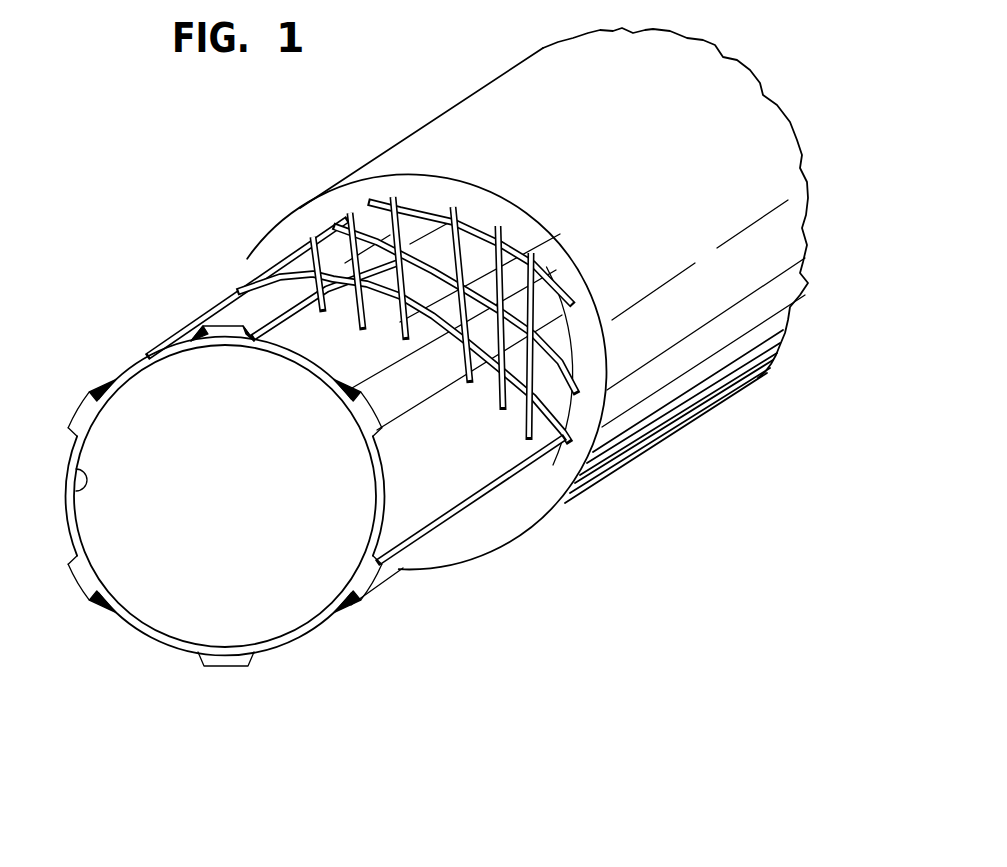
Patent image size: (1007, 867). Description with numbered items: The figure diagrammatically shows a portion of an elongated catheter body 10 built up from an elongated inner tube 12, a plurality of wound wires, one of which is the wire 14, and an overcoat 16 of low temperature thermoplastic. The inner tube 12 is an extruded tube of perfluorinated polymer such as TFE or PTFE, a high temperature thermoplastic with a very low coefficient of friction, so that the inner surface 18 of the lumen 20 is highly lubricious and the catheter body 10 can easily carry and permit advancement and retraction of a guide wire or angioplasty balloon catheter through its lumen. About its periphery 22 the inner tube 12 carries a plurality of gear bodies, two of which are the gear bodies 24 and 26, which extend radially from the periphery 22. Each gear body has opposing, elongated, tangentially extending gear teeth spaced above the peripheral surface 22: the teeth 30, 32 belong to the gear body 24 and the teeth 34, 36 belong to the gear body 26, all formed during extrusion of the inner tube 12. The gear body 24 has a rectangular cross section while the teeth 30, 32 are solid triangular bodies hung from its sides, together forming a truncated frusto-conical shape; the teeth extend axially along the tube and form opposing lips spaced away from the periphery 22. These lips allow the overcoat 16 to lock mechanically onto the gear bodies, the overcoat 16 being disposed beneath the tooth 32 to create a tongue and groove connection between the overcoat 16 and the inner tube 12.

The catheter body 10 is at (491, 74).
The inner tube 12 is at (139, 340).
The wire 14 is at (234, 290).
The overcoat 16 is at (392, 147).
The inner surface 18 is at (76, 488).
The lumen 20 is at (237, 507).
The periphery 22 is at (127, 363).
The gear body 24 is at (213, 313).
The gear body 26 is at (400, 412).
The gear tooth 30 is at (200, 341).
The gear tooth 32 is at (253, 342).
The gear tooth 34 is at (353, 388).
The gear tooth 36 is at (370, 452).